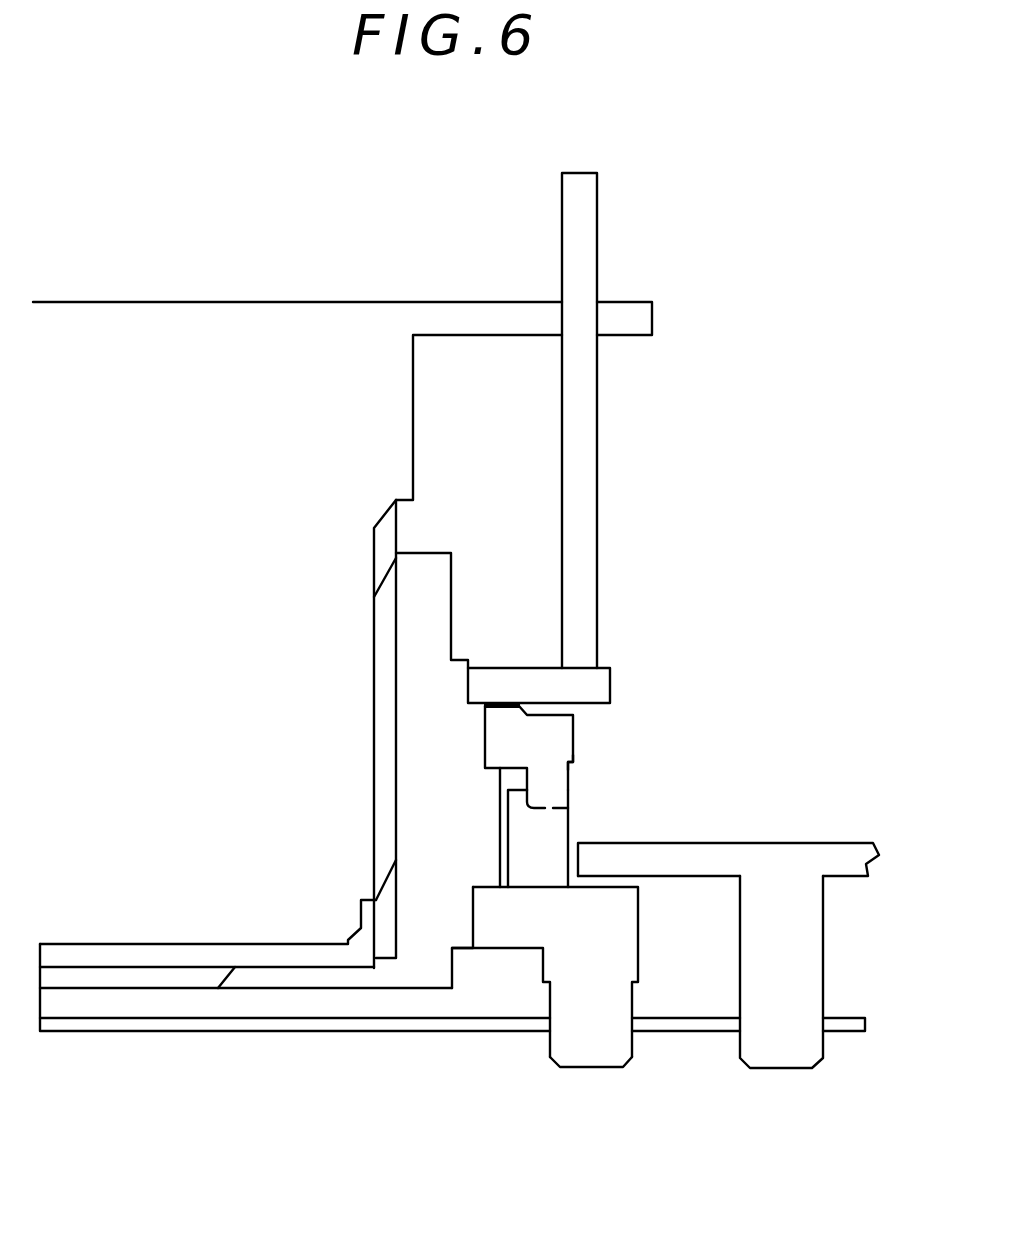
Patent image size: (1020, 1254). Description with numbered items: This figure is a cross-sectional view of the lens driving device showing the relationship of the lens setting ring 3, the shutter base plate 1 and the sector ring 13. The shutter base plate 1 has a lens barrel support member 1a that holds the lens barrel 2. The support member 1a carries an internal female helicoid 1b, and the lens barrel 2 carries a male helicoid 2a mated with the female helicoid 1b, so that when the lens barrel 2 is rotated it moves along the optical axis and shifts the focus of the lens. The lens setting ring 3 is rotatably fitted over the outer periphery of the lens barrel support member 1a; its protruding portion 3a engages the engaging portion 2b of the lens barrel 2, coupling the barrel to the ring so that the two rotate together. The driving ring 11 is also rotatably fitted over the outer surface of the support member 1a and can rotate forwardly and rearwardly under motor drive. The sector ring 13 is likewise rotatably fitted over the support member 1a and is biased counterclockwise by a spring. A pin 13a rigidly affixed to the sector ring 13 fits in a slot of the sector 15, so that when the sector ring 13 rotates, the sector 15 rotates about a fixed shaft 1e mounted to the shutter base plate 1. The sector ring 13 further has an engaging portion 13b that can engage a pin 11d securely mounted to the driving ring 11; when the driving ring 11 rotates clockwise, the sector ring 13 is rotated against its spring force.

The shutter base plate 1 is at (697, 860).
The lens barrel support member 1a is at (424, 597).
The female helicoid 1b is at (388, 927).
The fixed shaft 1e is at (789, 1055).
The lens barrel 2 is at (370, 323).
The male helicoid 2a is at (385, 543).
The engaging portion 2b is at (525, 317).
The lens setting ring 3 is at (512, 675).
The protruding portion 3a is at (580, 197).
The driving ring 11 is at (555, 735).
The pin 11d is at (550, 778).
The sector ring 13 is at (500, 917).
The pin 13a is at (590, 1051).
The engaging portion 13b is at (547, 832).
The sector 15 is at (248, 1020).